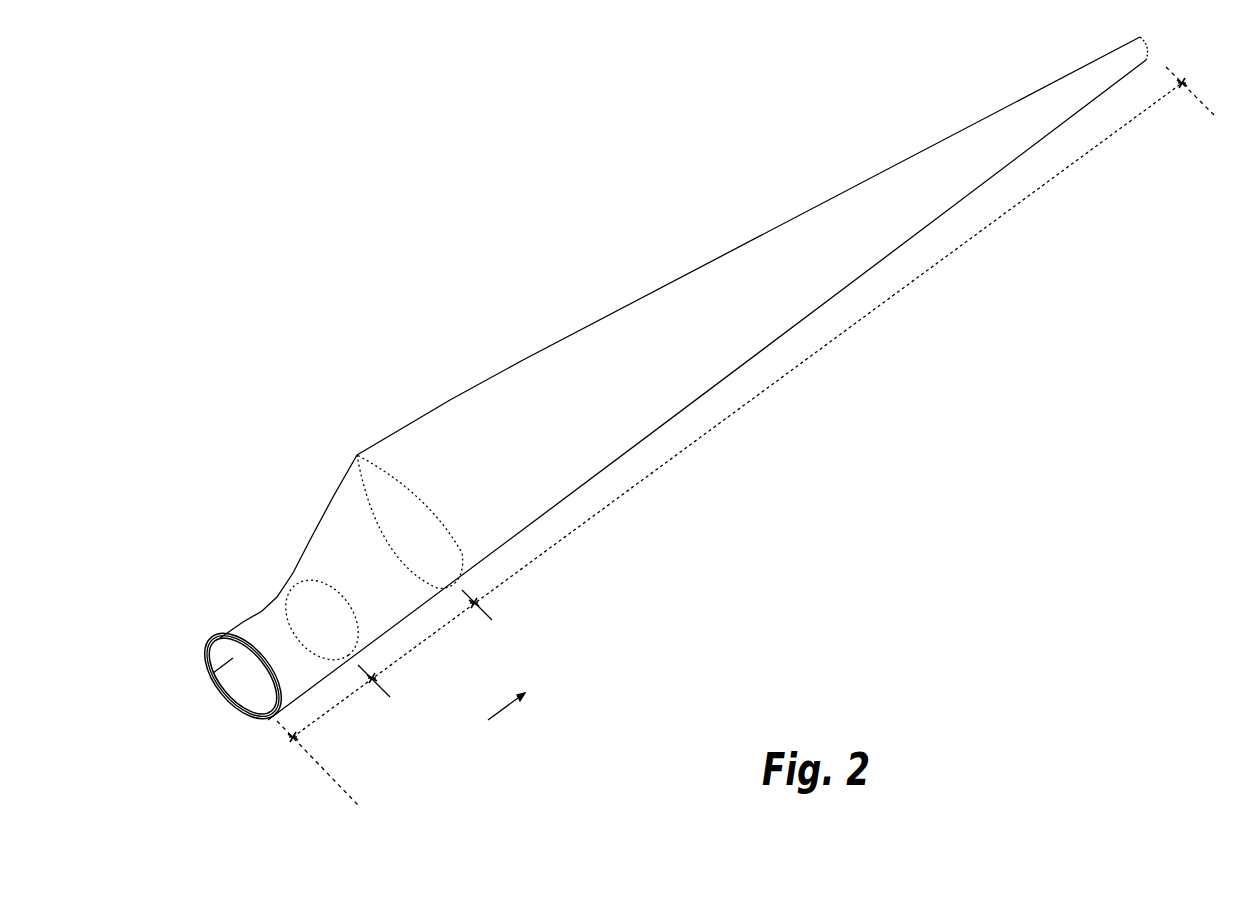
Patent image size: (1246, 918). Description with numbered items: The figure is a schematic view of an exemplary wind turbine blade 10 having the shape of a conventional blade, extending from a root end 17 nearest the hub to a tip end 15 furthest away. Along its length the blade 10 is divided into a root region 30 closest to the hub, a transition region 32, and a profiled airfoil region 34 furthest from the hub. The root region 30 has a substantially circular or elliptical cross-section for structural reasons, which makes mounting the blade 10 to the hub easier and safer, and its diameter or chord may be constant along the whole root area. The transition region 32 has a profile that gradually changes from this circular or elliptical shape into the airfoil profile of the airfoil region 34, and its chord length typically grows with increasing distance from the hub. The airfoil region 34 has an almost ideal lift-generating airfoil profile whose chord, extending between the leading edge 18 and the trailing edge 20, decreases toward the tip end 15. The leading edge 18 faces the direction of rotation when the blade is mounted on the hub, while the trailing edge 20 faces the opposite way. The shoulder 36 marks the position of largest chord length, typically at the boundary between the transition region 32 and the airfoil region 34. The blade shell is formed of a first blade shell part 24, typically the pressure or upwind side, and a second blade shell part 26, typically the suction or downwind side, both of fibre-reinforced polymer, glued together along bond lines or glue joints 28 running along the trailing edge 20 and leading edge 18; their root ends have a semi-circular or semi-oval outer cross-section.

The wind turbine blade 10 is at (703, 424).
The tip end 15 is at (1141, 37).
The root end 17 is at (215, 674).
The leading edge 18 is at (862, 275).
The trailing edge 20 is at (514, 254).
The first blade shell part 24 is at (238, 624).
The second blade shell part 26 is at (252, 714).
The bond lines or glue joints 28 is at (222, 632).
The root region 30 is at (335, 708).
The transition region 32 is at (425, 640).
The airfoil region 34 is at (758, 397).
The shoulder 36 is at (357, 455).